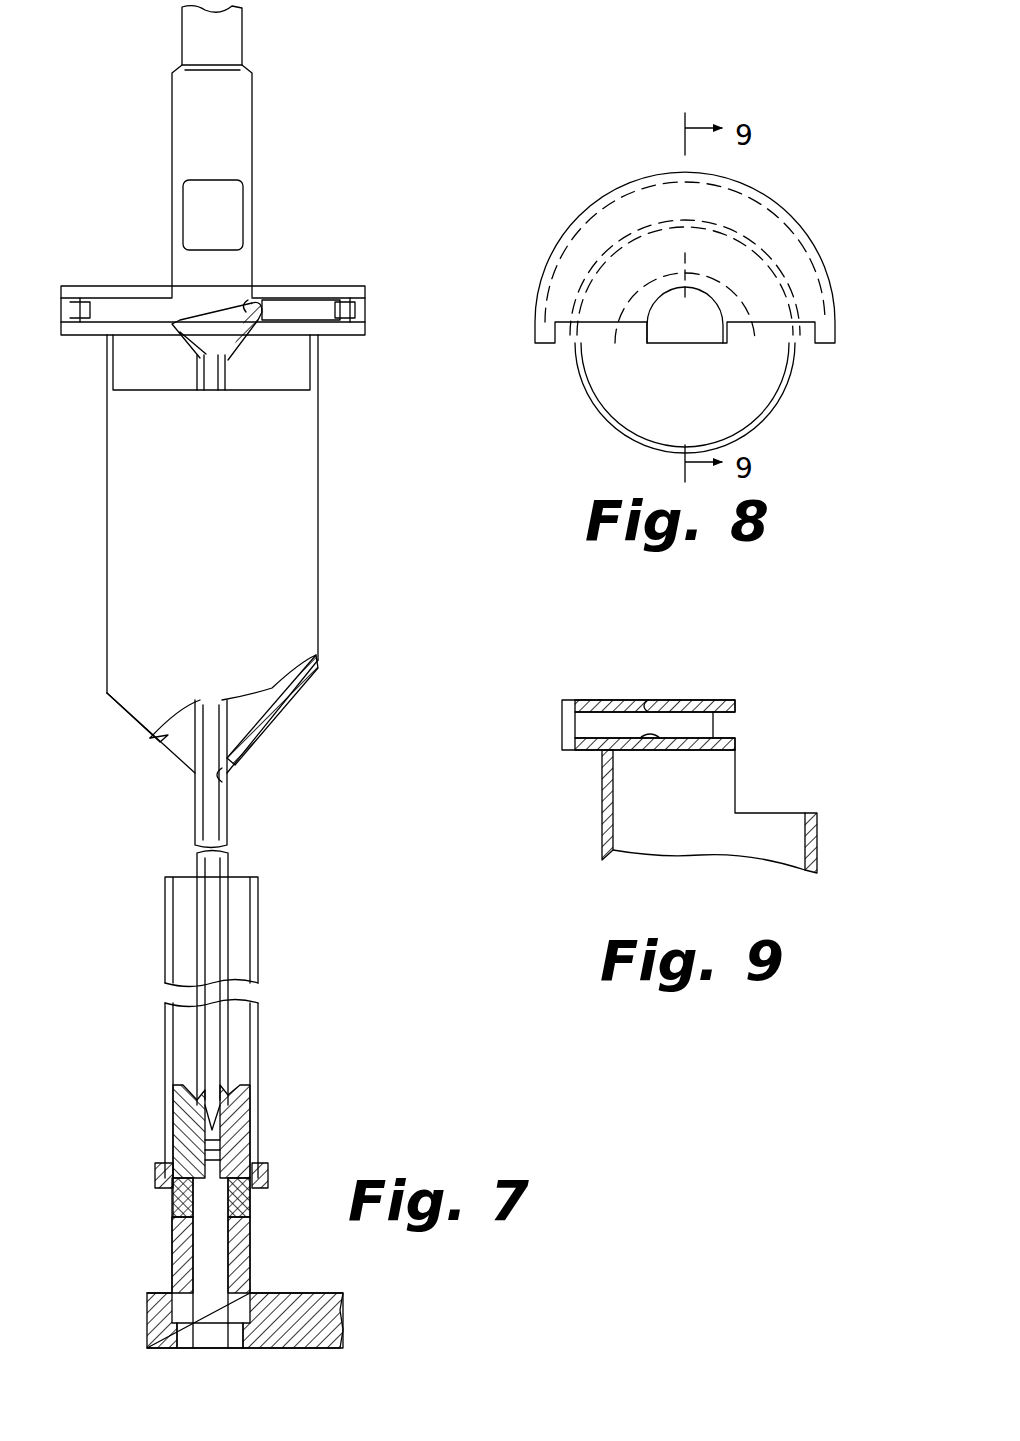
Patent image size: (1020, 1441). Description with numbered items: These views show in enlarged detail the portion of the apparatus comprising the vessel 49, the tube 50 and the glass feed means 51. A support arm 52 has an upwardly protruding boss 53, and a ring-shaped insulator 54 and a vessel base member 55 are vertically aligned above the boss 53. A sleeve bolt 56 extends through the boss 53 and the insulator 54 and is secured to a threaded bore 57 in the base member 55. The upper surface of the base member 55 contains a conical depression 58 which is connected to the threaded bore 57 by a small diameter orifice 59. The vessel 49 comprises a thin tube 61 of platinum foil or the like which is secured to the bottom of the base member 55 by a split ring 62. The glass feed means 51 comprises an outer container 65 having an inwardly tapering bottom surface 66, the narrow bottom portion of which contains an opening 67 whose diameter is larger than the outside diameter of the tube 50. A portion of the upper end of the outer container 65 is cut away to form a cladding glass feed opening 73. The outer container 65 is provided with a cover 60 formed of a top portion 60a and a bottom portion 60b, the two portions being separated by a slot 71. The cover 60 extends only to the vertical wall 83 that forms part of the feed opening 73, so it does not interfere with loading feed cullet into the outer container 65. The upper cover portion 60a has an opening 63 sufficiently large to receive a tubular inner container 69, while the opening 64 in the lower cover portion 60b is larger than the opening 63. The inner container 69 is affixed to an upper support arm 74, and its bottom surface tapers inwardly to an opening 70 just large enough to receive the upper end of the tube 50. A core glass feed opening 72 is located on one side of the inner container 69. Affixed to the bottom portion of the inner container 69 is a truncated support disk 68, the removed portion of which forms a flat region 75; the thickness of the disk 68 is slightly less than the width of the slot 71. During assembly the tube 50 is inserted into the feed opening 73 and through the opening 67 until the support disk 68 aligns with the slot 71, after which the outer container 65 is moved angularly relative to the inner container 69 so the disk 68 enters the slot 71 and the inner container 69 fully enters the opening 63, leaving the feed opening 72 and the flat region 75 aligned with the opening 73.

In FIG. 7, the vessel 49 is at (264, 948).
In FIG. 7, the tube 50 is at (228, 367).
In FIG. 7, the glass feed means 51 is at (346, 266).
In FIG. 7, the support arm 52 is at (316, 1300).
In FIG. 7, the boss 53 is at (245, 1252).
In FIG. 7, the ring-shaped insulator 54 is at (178, 1208).
In FIG. 7, the vessel base member 55 is at (245, 1105).
In FIG. 7, the sleeve bolt 56 is at (210, 1250).
In FIG. 7, the threaded bore 57 is at (228, 1142).
In FIG. 7, the conical depression 58 is at (238, 1090).
In FIG. 7, the orifice 59 is at (212, 1118).
In FIG. 7, the cover 60 is at (70, 283).
In FIG. 8, the cover 60 is at (780, 232).
In FIG. 9, the cover 60 is at (600, 695).
In FIG. 7, the top portion 60a is at (122, 286).
In FIG. 9, the top portion 60a is at (640, 700).
In FIG. 7, the bottom portion 60b is at (80, 336).
In FIG. 9, the bottom portion 60b is at (590, 752).
In FIG. 7, the thin tube 61 is at (260, 915).
In FIG. 7, the split ring 62 is at (268, 1178).
In FIG. 7, the opening 63 is at (250, 285).
In FIG. 8, the opening 63 is at (652, 343).
In FIG. 9, the opening 63 is at (682, 708).
In FIG. 7, the opening 64 is at (155, 336).
In FIG. 8, the opening 64 is at (685, 298).
In FIG. 9, the opening 64 is at (652, 742).
In FIG. 7, the outer container 65 is at (320, 517).
In FIG. 8, the outer container 65 is at (600, 395).
In FIG. 9, the outer container 65 is at (818, 842).
In FIG. 7, the inwardly tapering bottom surface 66 is at (280, 732).
In FIG. 7, the opening 67 is at (230, 790).
In FIG. 7, the truncated support disk 68 is at (345, 313).
In FIG. 7, the tubular inner container 69 is at (192, 265).
In FIG. 7, the opening 70 is at (205, 367).
In FIG. 7, the slot 71 is at (80, 306).
In FIG. 9, the slot 71 is at (592, 725).
In FIG. 7, the core glass feed opening 72 is at (212, 186).
In FIG. 7, the cladding glass feed opening 73 is at (300, 350).
In FIG. 8, the cladding glass feed opening 73 is at (752, 378).
In FIG. 9, the cladding glass feed opening 73 is at (756, 800).
In FIG. 7, the upper support arm 74 is at (232, 28).
In FIG. 7, the flat region 75 is at (291, 306).
In FIG. 7, the vertical wall 83 is at (130, 385).
In FIG. 9, the vertical wall 83 is at (740, 770).